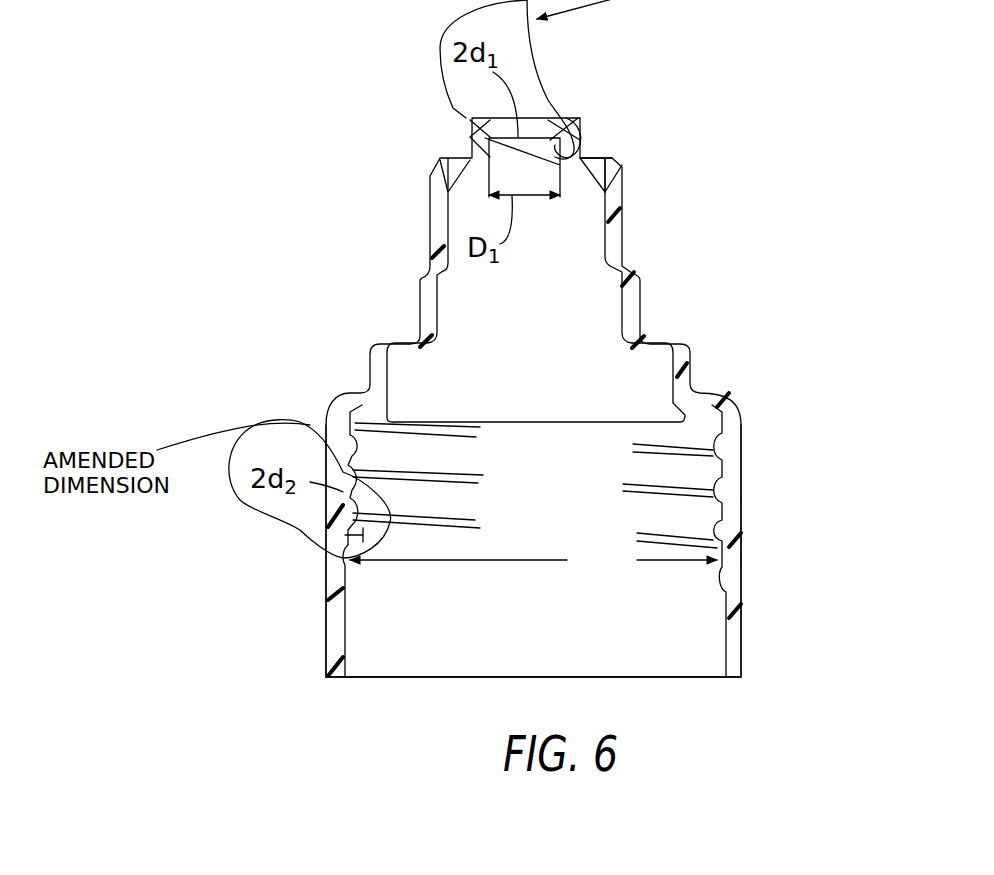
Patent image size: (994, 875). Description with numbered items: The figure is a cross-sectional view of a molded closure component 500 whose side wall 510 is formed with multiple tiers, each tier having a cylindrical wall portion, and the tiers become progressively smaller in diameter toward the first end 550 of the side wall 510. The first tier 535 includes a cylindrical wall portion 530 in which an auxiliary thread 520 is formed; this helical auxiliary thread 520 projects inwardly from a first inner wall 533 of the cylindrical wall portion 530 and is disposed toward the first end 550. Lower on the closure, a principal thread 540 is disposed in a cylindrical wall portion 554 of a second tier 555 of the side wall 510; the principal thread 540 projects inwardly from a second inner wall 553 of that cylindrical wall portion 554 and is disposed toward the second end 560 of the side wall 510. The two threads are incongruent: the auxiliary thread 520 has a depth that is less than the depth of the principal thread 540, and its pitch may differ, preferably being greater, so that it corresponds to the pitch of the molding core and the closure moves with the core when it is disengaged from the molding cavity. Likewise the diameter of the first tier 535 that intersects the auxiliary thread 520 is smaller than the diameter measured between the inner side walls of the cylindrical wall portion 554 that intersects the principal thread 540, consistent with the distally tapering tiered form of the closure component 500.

The molded closure component 500 is at (757, 333).
The side wall 510 is at (323, 542).
The auxiliary thread 520 is at (580, 152).
The cylindrical wall portion 530 is at (470, 118).
The first inner wall 533 is at (568, 186).
The first tier 535 is at (586, 149).
The principal thread 540 is at (712, 508).
The first end 550 is at (566, 118).
The second inner wall 553 is at (717, 578).
The cylindrical wall portion 554 is at (728, 548).
The second tier 555 is at (745, 433).
The second end 560 is at (690, 677).